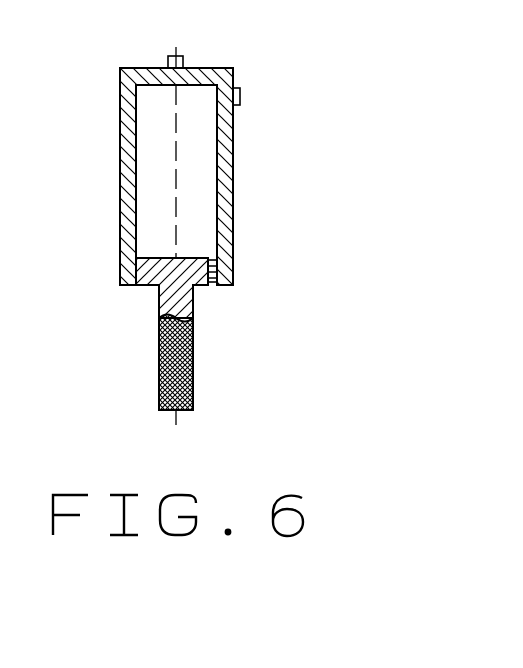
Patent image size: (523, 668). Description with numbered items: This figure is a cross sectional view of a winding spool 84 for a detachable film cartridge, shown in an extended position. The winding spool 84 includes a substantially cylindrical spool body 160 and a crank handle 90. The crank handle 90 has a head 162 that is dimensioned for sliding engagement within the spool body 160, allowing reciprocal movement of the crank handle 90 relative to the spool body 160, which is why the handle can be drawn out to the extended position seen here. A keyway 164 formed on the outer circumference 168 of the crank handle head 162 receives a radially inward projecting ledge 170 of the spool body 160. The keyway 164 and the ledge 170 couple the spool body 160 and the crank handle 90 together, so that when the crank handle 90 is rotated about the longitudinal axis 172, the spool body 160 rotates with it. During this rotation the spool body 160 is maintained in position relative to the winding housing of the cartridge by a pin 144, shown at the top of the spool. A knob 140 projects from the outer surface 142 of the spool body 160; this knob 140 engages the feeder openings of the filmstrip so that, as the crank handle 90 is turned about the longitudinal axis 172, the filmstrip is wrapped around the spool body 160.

The winding spool 84 is at (278, 60).
The crank handle 90 is at (194, 361).
The knob 140 is at (241, 96).
The outer surface 142 is at (234, 171).
The pin 144 is at (184, 57).
The spool body 160 is at (234, 138).
The head 162 is at (150, 275).
The keyway 164 is at (205, 258).
The outer circumference 168 is at (208, 257).
The ledge 170 is at (218, 267).
The longitudinal axis 172 is at (173, 107).